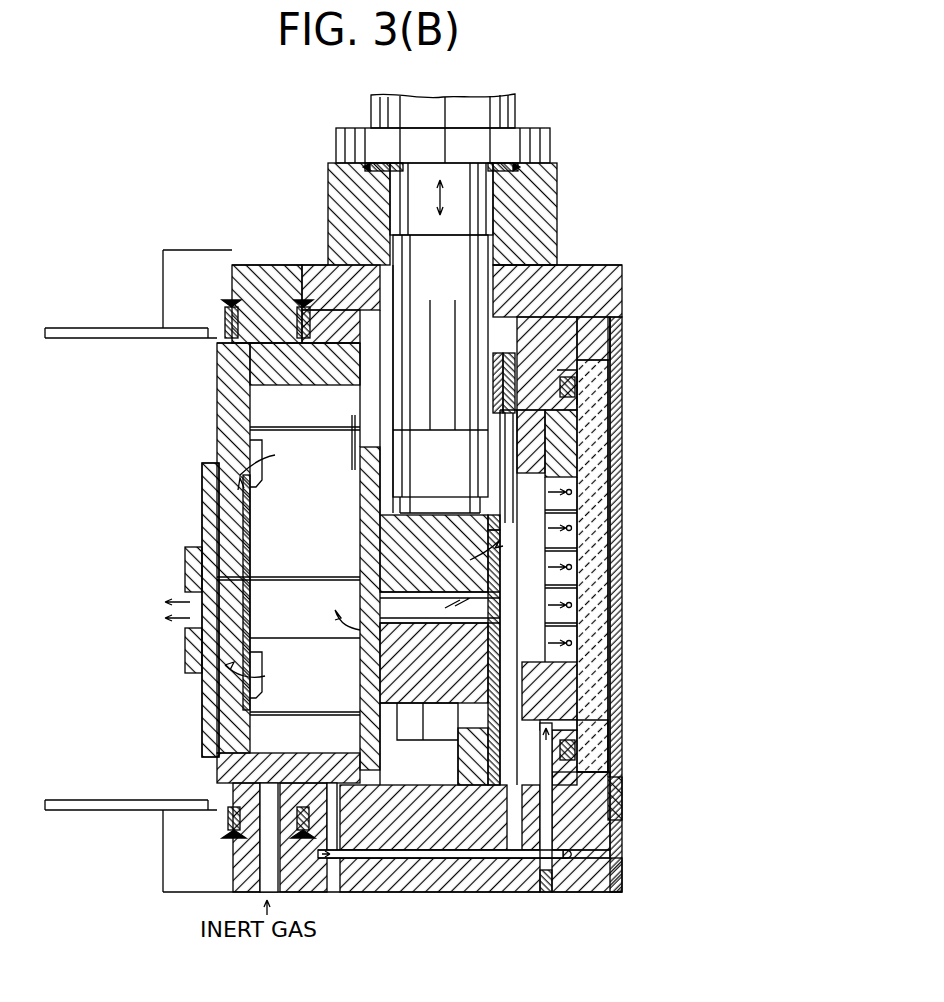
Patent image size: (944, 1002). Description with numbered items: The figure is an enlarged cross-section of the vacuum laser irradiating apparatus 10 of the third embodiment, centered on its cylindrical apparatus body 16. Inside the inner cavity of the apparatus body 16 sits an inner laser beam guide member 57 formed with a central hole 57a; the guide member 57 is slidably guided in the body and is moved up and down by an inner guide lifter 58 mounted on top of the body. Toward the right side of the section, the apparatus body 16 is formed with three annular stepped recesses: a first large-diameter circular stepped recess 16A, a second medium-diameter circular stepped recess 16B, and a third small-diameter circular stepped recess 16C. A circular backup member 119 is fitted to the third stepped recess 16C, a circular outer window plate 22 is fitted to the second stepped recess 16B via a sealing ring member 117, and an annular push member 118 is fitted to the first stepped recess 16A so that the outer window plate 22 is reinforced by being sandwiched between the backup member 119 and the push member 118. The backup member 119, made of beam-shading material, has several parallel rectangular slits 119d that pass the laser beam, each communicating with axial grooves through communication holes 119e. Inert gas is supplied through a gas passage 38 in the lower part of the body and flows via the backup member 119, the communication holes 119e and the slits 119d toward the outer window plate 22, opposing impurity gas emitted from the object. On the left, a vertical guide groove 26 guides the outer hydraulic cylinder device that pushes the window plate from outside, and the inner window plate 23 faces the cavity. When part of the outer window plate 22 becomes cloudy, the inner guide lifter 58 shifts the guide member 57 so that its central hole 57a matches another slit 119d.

The vacuum laser irradiating apparatus 10 is at (222, 240).
The apparatus body 16 is at (605, 292).
The inner guide lifter 58 is at (515, 108).
The sealing ring member 117 is at (575, 385).
The backup member 119 is at (565, 445).
The rectangular slits 119d is at (570, 492).
The communication holes 119e is at (580, 510).
The outer window plate 22 is at (595, 570).
The push member 118 is at (622, 675).
The third small-diameter circular stepped recess 16C is at (570, 745).
The second medium-diameter circular stepped recess 16B is at (600, 758).
The first large-diameter circular stepped recess 16A is at (615, 815).
The vertical guide groove 26 is at (203, 497).
The inner window plate 23 is at (245, 532).
The inner laser beam guide member 57 is at (410, 690).
The central hole 57a is at (455, 616).
The gas passage 38 is at (428, 858).